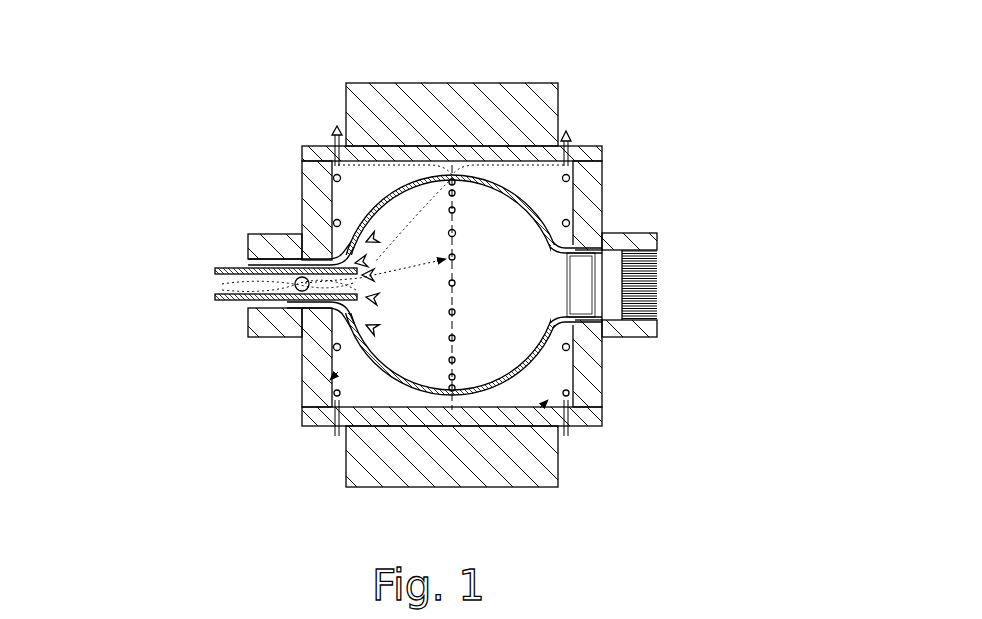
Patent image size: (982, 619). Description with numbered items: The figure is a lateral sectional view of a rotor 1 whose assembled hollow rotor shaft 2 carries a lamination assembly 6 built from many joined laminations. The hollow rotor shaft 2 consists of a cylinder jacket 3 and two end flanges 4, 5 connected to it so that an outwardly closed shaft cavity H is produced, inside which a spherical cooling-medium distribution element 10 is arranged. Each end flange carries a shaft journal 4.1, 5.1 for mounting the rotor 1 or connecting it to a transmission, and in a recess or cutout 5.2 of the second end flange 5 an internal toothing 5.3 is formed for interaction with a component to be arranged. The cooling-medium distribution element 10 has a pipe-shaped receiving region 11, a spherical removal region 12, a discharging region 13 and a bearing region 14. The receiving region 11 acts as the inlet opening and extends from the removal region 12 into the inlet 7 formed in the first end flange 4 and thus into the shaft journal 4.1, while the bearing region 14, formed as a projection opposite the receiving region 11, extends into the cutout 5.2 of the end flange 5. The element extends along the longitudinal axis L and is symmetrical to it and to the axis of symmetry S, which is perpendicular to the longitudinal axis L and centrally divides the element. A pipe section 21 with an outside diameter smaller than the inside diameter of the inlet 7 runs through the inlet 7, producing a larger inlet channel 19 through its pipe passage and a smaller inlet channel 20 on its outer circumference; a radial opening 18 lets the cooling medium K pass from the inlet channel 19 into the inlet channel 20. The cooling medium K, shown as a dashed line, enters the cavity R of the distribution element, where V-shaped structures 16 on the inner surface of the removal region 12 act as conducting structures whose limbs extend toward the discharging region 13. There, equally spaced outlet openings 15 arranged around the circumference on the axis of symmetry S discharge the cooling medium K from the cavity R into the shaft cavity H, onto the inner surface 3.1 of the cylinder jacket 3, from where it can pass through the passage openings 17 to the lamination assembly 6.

The rotor 1 is at (579, 50).
The hollow rotor shaft 2 is at (284, 130).
The cylinder jacket 3 is at (603, 153).
The inner surface 3.1 is at (603, 412).
The end flange 4 is at (302, 176).
The shaft journal 4.1 is at (268, 236).
The end flange 5 is at (603, 190).
The shaft journal 5.1 is at (658, 238).
The cutout 5.2 is at (625, 236).
The toothing 5.3 is at (658, 265).
The lamination assembly 6 is at (458, 83).
The inlet 7 is at (258, 304).
The cooling-medium distribution element 10 is at (556, 462).
The receiving region 11 is at (287, 337).
The removal region 12 is at (603, 377).
The discharging region 13 is at (495, 395).
The bearing region 14 is at (658, 325).
The outlet openings 15 is at (456, 233).
The structures 16 is at (380, 300).
The passage openings 17 is at (570, 132).
The radial opening 18 is at (303, 258).
The inlet channel 19 is at (220, 288).
The inlet channel 20 is at (286, 267).
The pipe section 21 is at (250, 301).
The cooling medium K is at (333, 125).
The axis of symmetry S is at (458, 324).
The shaft cavity H is at (300, 402).
The longitudinal axis L is at (658, 285).
The cavity R is at (416, 354).